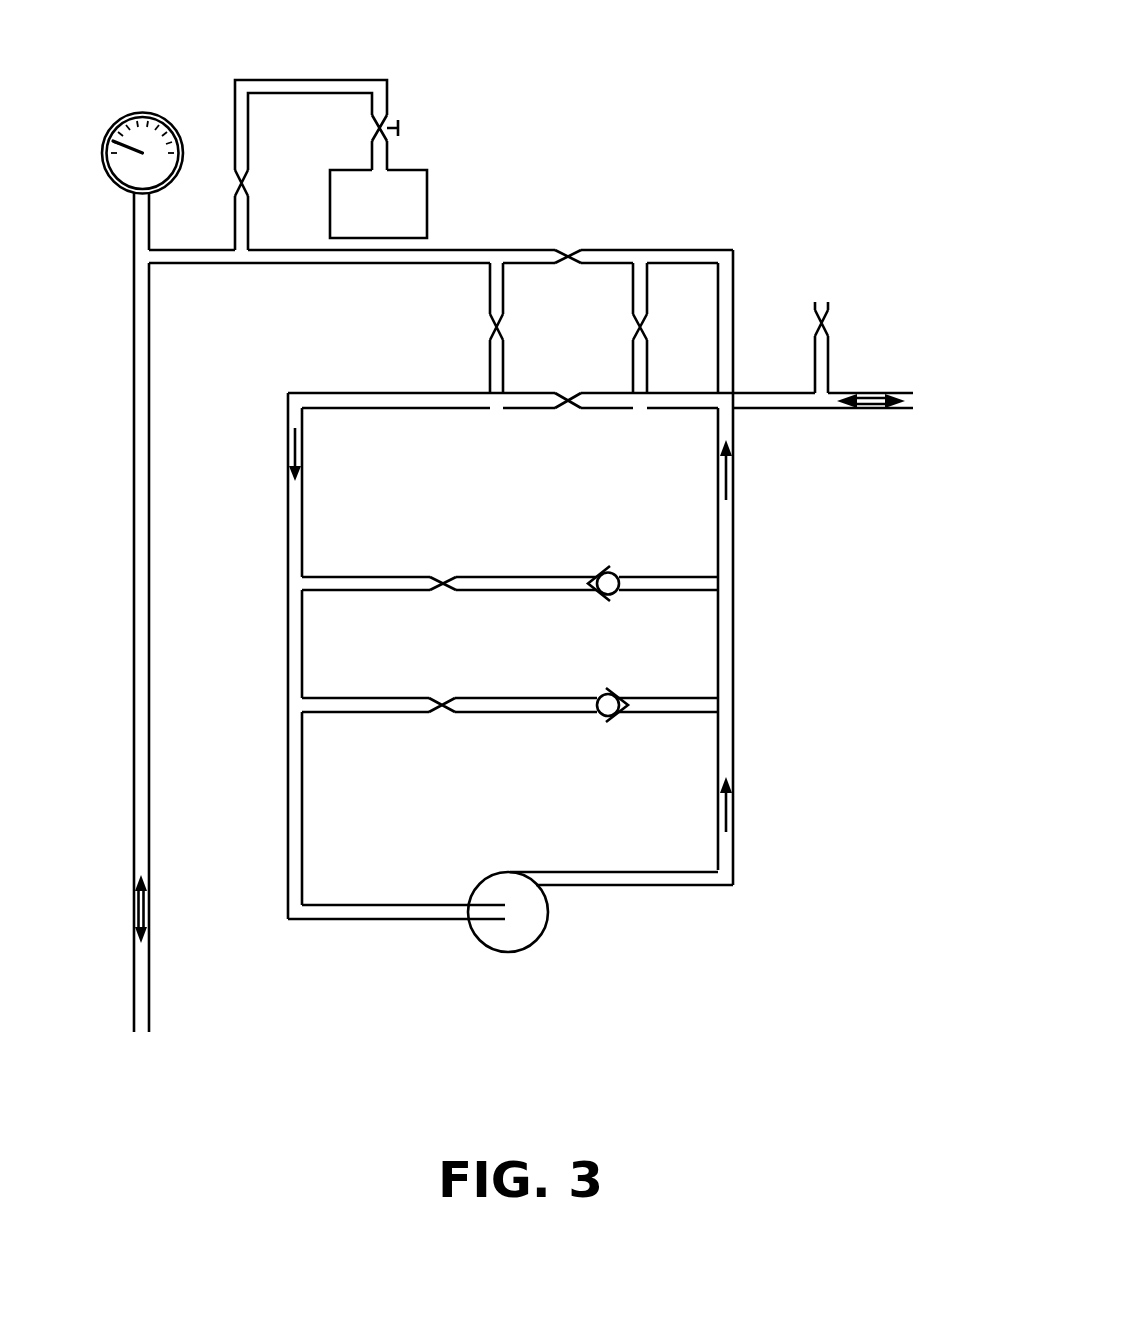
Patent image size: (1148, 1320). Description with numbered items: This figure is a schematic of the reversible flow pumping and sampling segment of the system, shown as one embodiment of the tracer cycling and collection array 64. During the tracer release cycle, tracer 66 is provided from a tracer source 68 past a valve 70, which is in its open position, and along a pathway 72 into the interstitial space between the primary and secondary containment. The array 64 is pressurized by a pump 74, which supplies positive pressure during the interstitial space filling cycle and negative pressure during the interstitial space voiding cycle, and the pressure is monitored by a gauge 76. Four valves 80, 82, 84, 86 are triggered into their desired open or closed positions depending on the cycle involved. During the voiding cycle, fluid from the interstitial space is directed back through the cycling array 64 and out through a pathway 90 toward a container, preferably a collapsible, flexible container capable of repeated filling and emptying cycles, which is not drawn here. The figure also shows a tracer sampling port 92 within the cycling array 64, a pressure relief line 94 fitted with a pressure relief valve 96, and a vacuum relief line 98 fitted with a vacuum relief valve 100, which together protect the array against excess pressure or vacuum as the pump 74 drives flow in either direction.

The tracer cycling and collection array 64 is at (860, 739).
The tracer 66 is at (405, 208).
The tracer source 68 is at (418, 170).
The valve 70 is at (378, 129).
The pathway 72 is at (250, 222).
The pump 74 is at (530, 926).
The gauge 76 is at (141, 112).
The valve 80 is at (503, 327).
The valve 82 is at (568, 251).
The valve 84 is at (647, 327).
The valve 86 is at (568, 402).
The pathway 90 is at (882, 393).
The tracer sampling port 92 is at (828, 302).
The pressure relief line 94 is at (375, 577).
The pressure relief valve 96 is at (443, 591).
The vacuum relief line 98 is at (375, 698).
The vacuum relief valve 100 is at (442, 713).